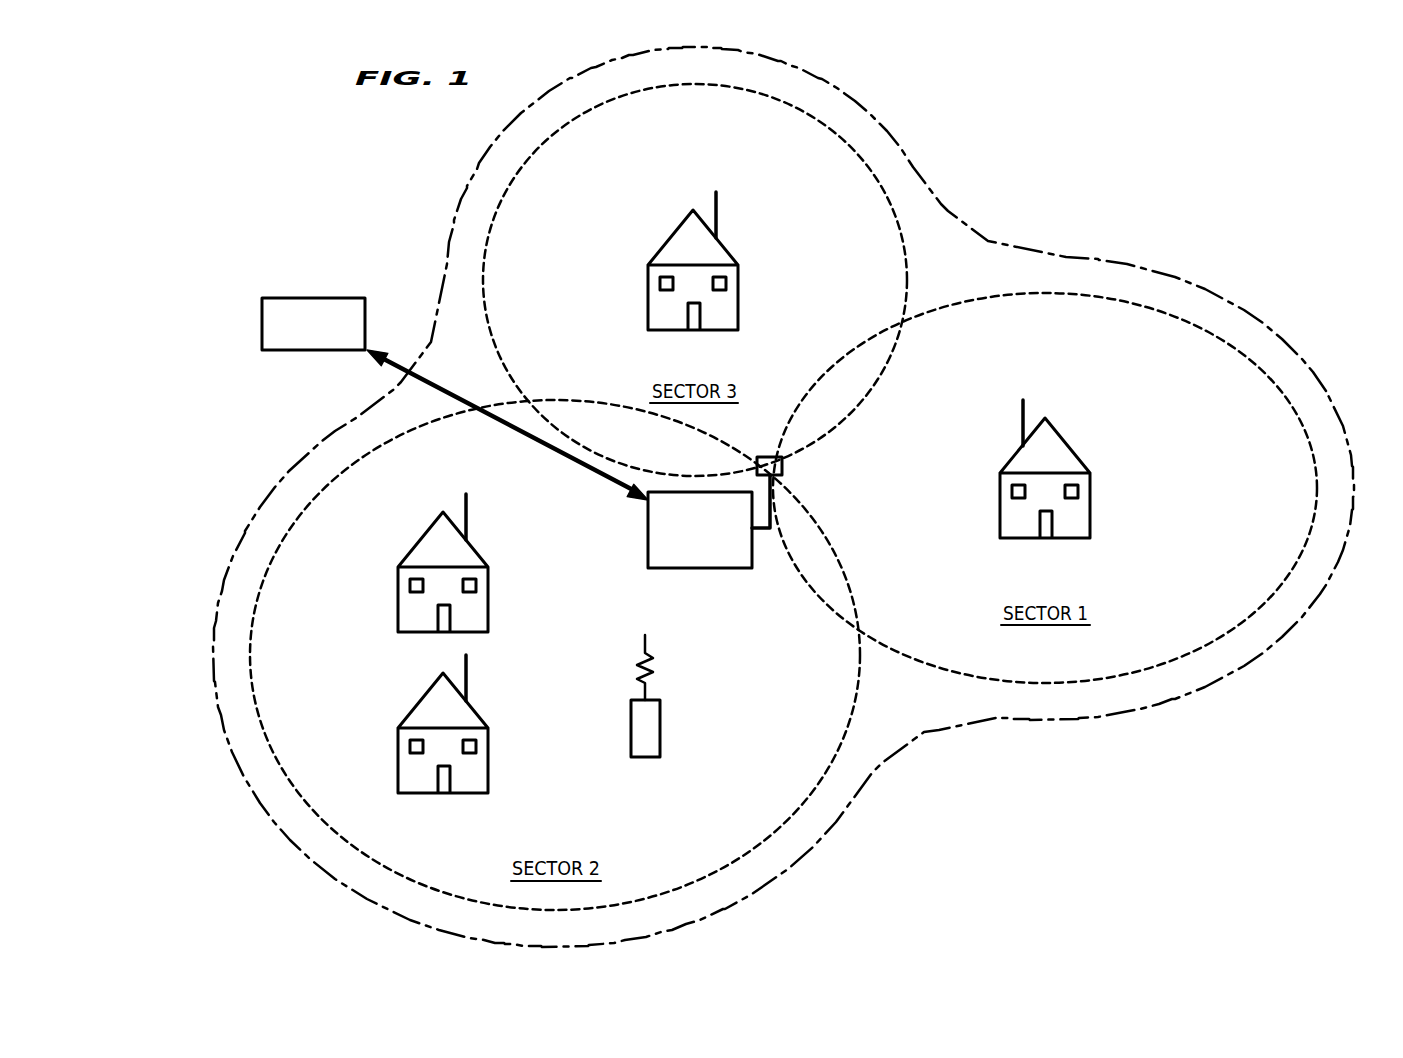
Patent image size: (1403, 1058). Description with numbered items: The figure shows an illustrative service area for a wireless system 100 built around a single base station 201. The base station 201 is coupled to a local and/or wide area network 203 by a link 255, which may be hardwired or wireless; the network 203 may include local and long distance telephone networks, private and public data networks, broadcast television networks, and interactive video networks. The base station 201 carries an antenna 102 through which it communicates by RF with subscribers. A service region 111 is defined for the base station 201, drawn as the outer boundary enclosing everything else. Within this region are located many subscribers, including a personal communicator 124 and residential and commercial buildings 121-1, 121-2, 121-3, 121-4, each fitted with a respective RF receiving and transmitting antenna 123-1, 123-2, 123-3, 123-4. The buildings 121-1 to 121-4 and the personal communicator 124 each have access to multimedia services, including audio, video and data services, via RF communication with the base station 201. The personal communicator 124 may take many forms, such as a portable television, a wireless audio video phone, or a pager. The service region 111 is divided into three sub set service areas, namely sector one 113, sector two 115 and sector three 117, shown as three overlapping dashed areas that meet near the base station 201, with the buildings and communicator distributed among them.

The wireless communication system 100 is at (1153, 800).
The base station antenna 102 is at (762, 530).
The service region 111 is at (1258, 318).
The sector 1 113 is at (975, 302).
The sector 2 115 is at (862, 685).
The sector 3 117 is at (478, 307).
The residential and commercial building 121-1 is at (1090, 510).
The residential and commercial building 121-2 is at (488, 763).
The residential and commercial building 121-3 is at (488, 600).
The residential and commercial building 121-4 is at (738, 298).
The RF receiving and transmitting antenna 123-1 is at (1020, 412).
The RF receiving and transmitting antenna 123-2 is at (468, 667).
The RF receiving and transmitting antenna 123-3 is at (468, 505).
The RF receiving and transmitting antenna 123-4 is at (718, 203).
The personal communicator 124 is at (660, 725).
The base station 201 is at (675, 568).
The local and/or wide area network 203 is at (277, 298).
The link 255 is at (395, 358).